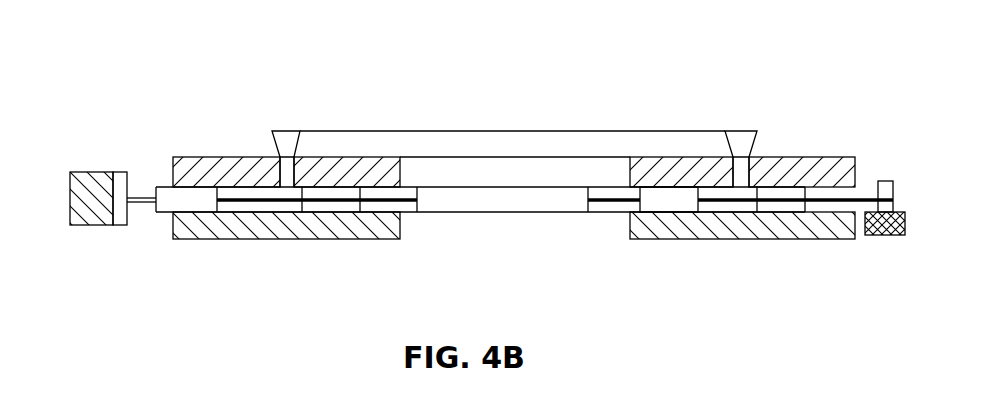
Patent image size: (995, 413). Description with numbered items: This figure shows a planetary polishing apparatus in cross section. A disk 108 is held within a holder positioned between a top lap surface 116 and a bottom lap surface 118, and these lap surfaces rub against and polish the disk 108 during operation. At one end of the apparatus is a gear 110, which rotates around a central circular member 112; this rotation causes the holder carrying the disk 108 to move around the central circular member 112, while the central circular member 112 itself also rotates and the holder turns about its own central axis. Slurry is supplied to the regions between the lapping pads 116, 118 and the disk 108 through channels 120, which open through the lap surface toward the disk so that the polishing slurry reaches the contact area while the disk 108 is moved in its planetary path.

The disk 108 is at (653, 193).
The gear 110 is at (100, 172).
The central circular member 112 is at (445, 212).
The top lap surface 116 is at (265, 239).
The bottom lap surface 118 is at (227, 157).
The channel 120 is at (287, 163).